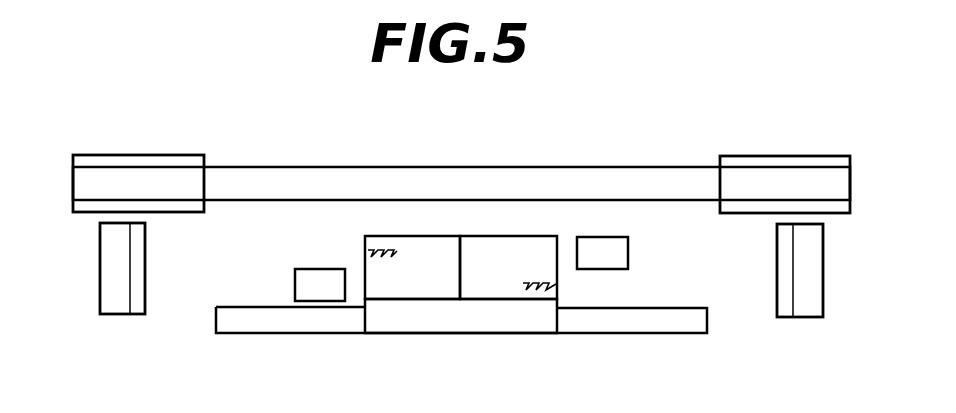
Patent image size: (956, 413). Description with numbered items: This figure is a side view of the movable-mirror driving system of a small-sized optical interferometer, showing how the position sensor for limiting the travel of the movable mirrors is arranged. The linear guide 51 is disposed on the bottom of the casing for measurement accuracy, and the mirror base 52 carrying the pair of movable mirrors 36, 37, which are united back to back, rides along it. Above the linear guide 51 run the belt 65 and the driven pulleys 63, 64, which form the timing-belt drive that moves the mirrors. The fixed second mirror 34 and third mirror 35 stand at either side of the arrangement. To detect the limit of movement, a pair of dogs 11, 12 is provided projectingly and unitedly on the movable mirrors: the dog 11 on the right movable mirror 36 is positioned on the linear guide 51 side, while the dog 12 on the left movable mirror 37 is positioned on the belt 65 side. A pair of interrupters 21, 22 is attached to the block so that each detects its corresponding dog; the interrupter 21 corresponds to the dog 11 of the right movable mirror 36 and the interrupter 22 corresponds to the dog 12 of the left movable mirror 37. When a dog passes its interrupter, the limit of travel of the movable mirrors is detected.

The belt 65 is at (463, 177).
The driven pulley 63 is at (126, 163).
The driven pulley 64 is at (798, 164).
The third mirror 35 is at (107, 263).
The second mirror 34 is at (817, 262).
The interrupter 21 is at (307, 287).
The interrupter 22 is at (618, 256).
The linear guide 51 is at (626, 322).
The mirror base 52 is at (458, 318).
The movable mirror 37 is at (413, 288).
The movable mirror 36 is at (495, 288).
The dog 12 is at (367, 250).
The dog 11 is at (560, 284).